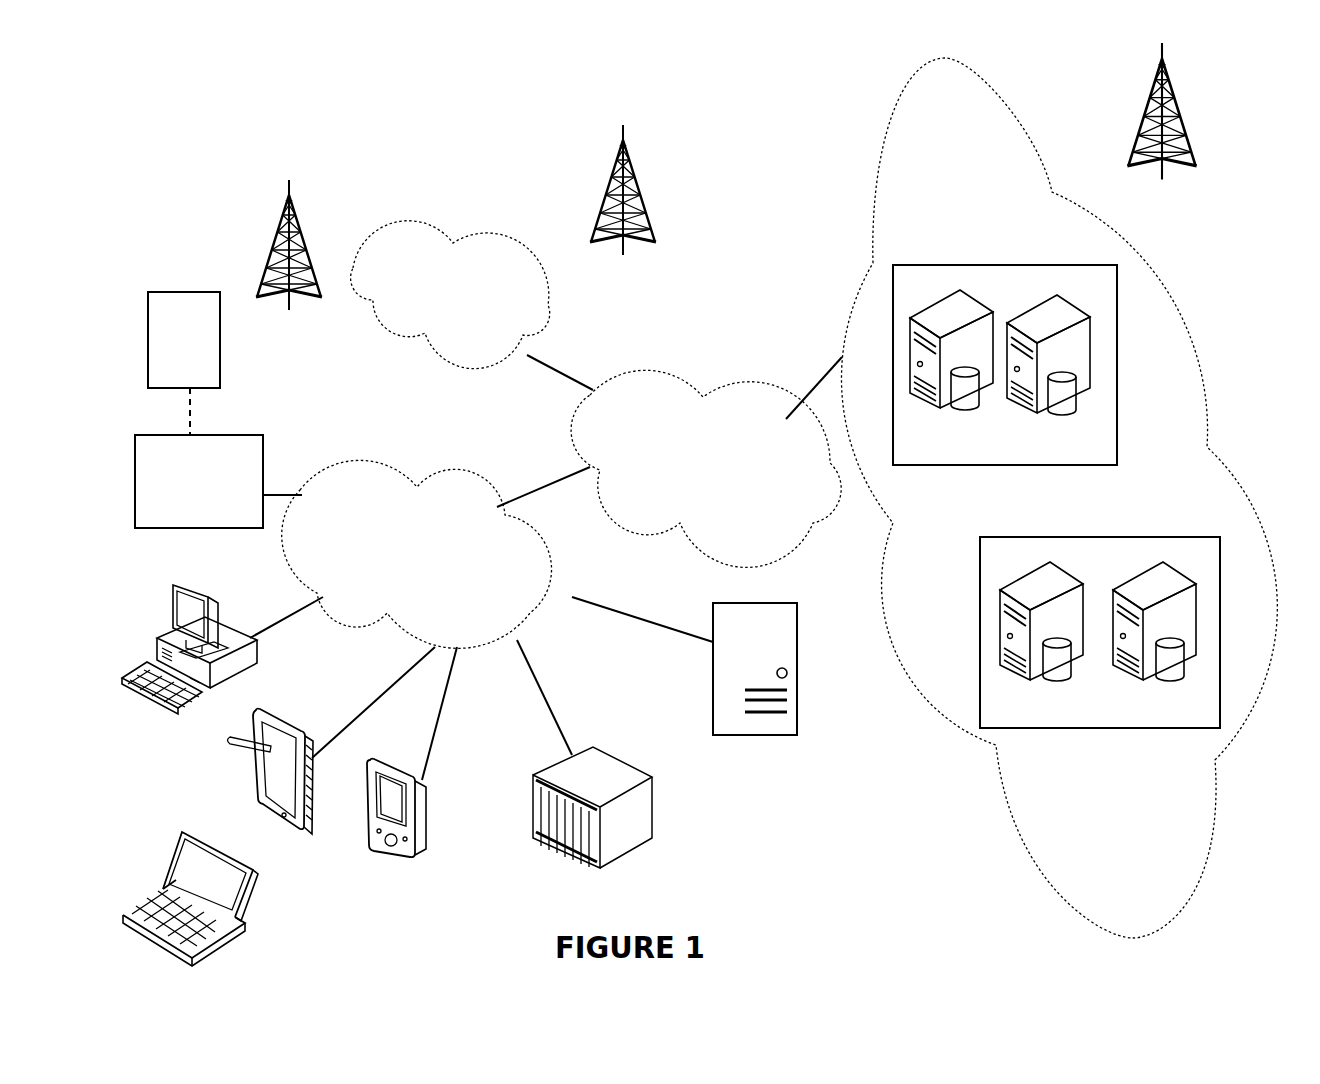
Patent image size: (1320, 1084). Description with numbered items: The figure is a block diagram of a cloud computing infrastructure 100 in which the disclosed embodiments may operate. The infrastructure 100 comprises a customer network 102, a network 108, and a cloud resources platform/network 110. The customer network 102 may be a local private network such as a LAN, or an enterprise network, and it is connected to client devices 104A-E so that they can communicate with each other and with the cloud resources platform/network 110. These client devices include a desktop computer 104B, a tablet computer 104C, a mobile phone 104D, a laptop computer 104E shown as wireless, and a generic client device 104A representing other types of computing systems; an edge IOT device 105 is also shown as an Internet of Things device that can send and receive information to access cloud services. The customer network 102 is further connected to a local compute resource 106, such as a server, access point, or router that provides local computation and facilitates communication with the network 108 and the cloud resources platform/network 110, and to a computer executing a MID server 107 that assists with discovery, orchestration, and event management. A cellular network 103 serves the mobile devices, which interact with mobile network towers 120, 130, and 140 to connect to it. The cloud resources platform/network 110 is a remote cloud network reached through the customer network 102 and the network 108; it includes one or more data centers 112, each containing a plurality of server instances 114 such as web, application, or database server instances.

The cloud computing infrastructure 100 is at (364, 151).
The customer network 102 is at (392, 467).
The cellular network 103 is at (482, 242).
The client device 104A is at (225, 435).
The desktop computer 104B is at (202, 590).
The tablet computer 104C is at (282, 712).
The mobile phone 104D is at (420, 778).
The laptop computer 104E is at (252, 870).
The edge IOT device 105 is at (165, 292).
The local compute resource 106 is at (593, 750).
The MID server 107 is at (748, 735).
The network 108 is at (648, 370).
The cloud resources platform/network 110 is at (1162, 265).
The data center 112 is at (937, 265).
The server instance 114 is at (962, 408).
The mobile network tower 120 is at (623, 206).
The mobile network tower 130 is at (289, 262).
The mobile network tower 140 is at (1161, 124).